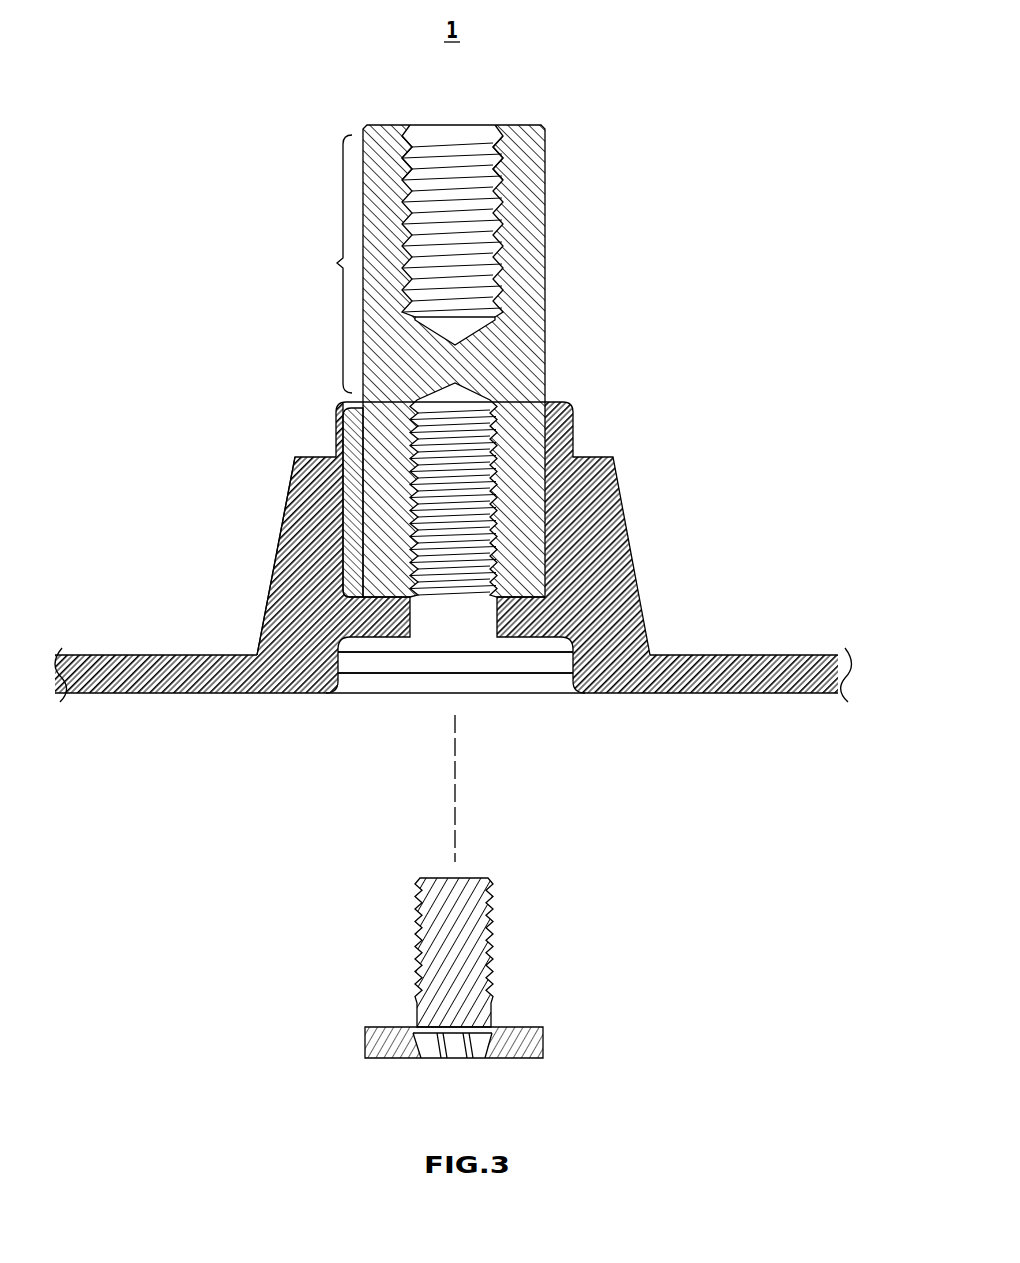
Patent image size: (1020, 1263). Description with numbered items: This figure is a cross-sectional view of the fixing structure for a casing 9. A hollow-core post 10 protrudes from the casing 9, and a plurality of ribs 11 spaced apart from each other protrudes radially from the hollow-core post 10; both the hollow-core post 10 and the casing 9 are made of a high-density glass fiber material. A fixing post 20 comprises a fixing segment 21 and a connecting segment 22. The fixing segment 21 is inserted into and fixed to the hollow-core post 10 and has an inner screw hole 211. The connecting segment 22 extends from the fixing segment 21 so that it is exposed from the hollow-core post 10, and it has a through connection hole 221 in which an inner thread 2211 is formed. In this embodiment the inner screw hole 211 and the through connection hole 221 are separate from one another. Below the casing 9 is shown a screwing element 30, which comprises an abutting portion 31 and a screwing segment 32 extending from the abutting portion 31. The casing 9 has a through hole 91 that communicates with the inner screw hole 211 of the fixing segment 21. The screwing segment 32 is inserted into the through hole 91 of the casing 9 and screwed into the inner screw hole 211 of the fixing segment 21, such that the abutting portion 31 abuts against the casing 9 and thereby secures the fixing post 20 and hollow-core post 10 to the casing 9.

The casing 9 is at (765, 665).
The through hole 91 is at (518, 665).
The hollow-core post 10 is at (643, 503).
The ribs 11 is at (282, 547).
The fixing post 20 is at (559, 257).
The fixing segment 21 is at (342, 503).
The inner screw hole 211 is at (487, 520).
The connecting segment 22 is at (329, 264).
The through connection hole 221 is at (454, 145).
The inner thread 2211 is at (502, 172).
The screwing element 30 is at (448, 971).
The abutting portion 31 is at (373, 1042).
The screwing segment 32 is at (415, 931).